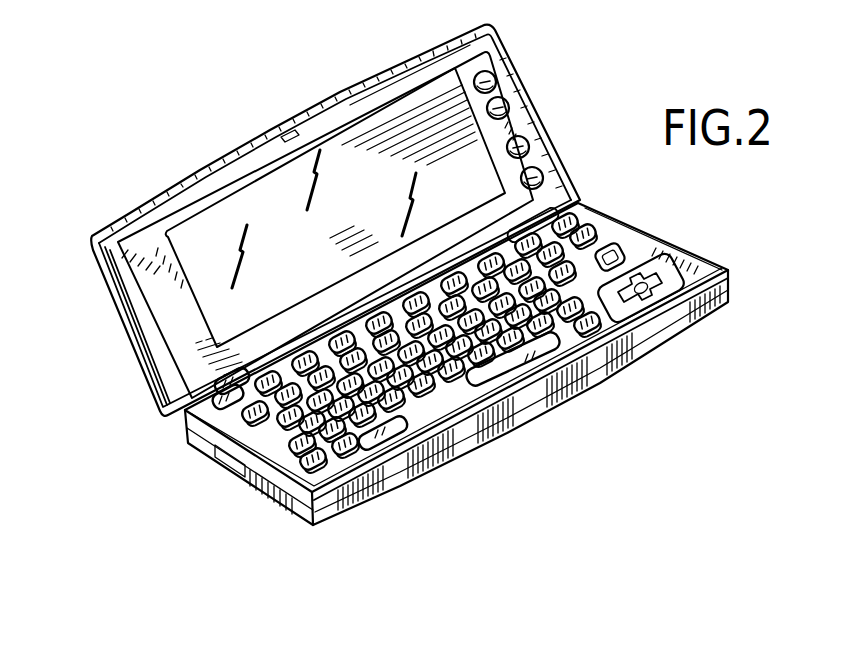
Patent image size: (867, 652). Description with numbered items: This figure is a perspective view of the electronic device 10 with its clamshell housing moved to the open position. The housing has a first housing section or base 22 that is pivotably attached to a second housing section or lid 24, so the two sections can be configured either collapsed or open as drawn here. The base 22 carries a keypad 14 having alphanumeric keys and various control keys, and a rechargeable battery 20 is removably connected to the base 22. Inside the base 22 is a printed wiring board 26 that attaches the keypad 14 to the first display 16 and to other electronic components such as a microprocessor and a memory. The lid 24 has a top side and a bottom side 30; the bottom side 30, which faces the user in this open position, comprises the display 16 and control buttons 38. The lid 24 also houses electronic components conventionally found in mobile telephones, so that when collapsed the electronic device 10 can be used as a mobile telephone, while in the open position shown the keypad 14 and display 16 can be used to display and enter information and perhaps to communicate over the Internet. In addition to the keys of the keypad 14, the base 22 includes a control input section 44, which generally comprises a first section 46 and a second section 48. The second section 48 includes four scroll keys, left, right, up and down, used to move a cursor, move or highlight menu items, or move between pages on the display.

The electronic device 10 is at (183, 172).
The keypad 14 is at (243, 463).
The first display 16 is at (243, 203).
The rechargeable battery 20 is at (507, 432).
The first housing section or base 22 is at (360, 505).
The second housing section or lid 24 is at (127, 225).
The printed wiring board 26 is at (574, 260).
The bottom side 30 is at (390, 120).
The control buttons 38 is at (553, 197).
The control input section 44 is at (637, 262).
The first section 46 is at (645, 300).
The second section 48 is at (672, 280).